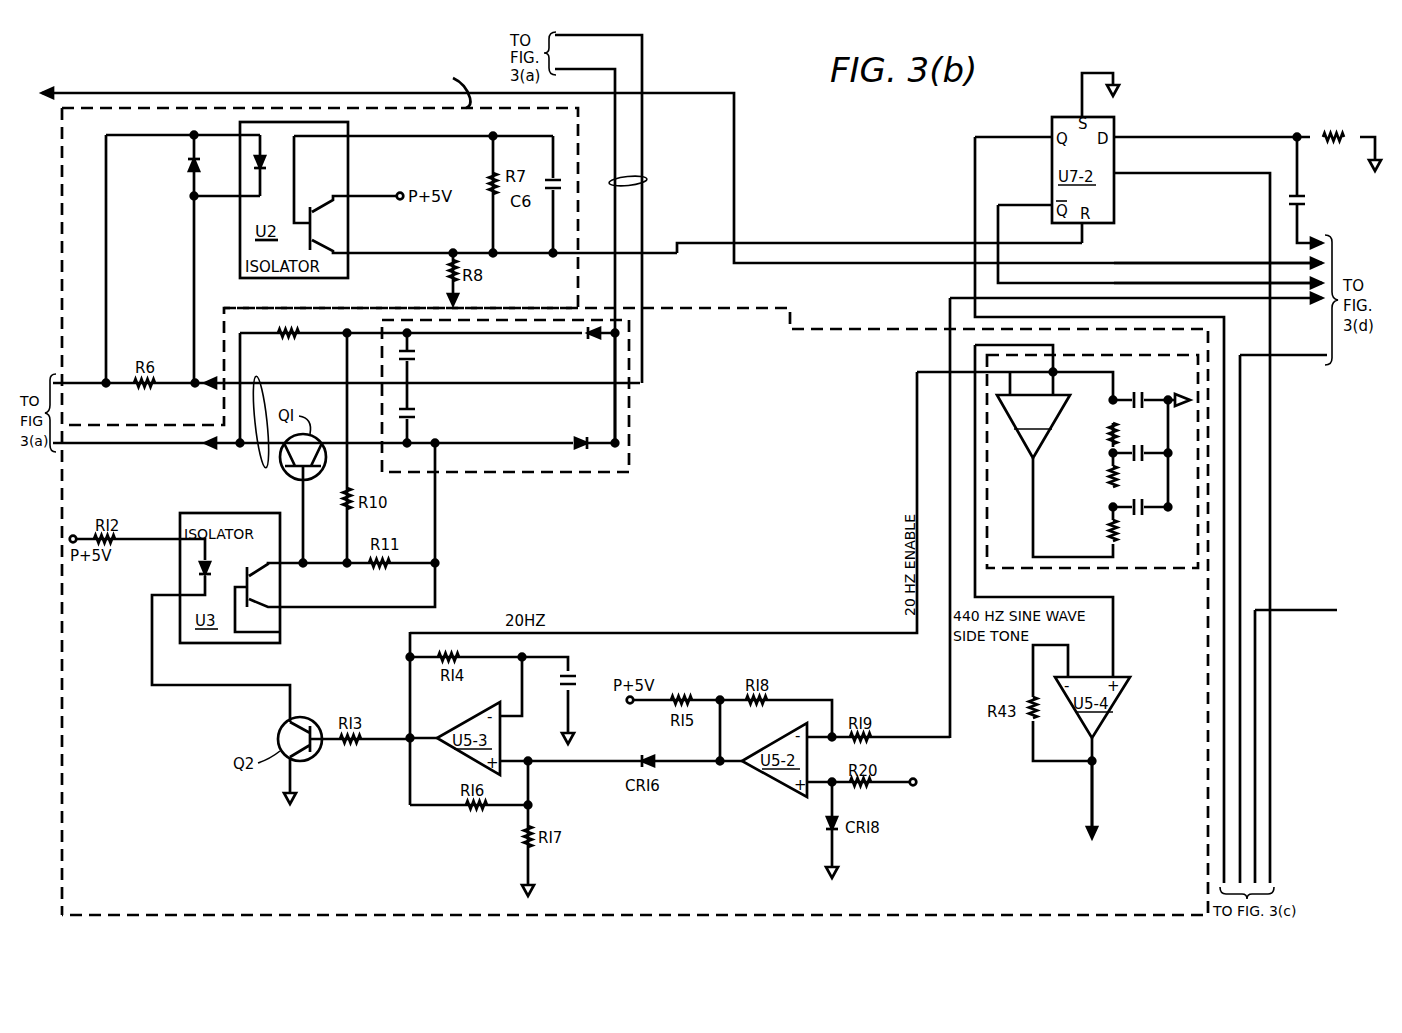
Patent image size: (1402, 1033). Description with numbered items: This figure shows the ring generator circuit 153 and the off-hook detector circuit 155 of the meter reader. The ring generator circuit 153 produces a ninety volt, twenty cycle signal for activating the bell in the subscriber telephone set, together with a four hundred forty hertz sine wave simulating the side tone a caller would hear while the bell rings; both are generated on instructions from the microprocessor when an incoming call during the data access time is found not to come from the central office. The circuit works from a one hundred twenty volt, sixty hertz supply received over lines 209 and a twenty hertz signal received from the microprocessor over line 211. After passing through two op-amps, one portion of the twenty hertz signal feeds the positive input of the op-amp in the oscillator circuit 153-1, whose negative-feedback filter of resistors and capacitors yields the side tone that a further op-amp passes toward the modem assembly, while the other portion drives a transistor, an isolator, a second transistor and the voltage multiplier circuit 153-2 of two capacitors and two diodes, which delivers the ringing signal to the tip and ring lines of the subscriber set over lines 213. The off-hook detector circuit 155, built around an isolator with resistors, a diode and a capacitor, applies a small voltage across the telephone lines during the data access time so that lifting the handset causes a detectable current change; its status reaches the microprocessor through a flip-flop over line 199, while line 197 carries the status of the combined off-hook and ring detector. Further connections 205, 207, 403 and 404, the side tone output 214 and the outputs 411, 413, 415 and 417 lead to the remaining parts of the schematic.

The ring generator circuit 153 is at (690, 898).
The oscillator circuit 153-1 is at (987, 446).
The voltage multiplier circuit 153-2 is at (630, 438).
The off-hook detector circuit 155 is at (164, 253).
The line 197 is at (760, 151).
The line 199 is at (675, 256).
The flip-flop Q output line 205 is at (975, 178).
The line to FIG. 3(c) 207 is at (1306, 358).
The lines 209 is at (648, 181).
The line 211 is at (950, 396).
The lines 213 is at (346, 430).
The side tone output to FIG. 3(c) 214 is at (1090, 800).
The line to FIG. 3(c) 403 is at (1255, 801).
The flip-flop output line to FIG. 3(c) 404 is at (1270, 844).
The capacitor output to FIG. 3(d) 411 is at (1302, 243).
The RING DET output 413 is at (1323, 262).
The OFF HOOK DET output 415 is at (1297, 284).
The RING output 417 is at (1305, 300).